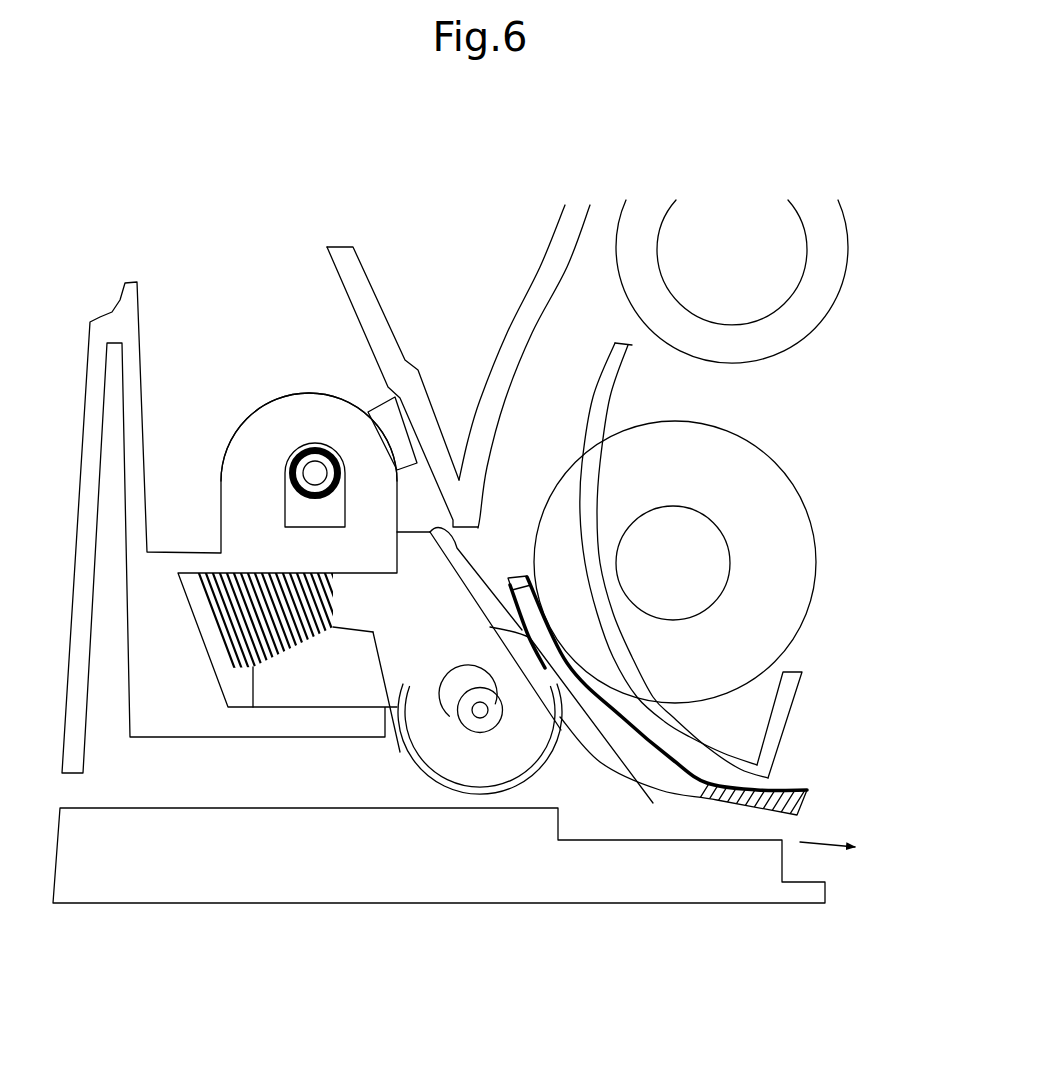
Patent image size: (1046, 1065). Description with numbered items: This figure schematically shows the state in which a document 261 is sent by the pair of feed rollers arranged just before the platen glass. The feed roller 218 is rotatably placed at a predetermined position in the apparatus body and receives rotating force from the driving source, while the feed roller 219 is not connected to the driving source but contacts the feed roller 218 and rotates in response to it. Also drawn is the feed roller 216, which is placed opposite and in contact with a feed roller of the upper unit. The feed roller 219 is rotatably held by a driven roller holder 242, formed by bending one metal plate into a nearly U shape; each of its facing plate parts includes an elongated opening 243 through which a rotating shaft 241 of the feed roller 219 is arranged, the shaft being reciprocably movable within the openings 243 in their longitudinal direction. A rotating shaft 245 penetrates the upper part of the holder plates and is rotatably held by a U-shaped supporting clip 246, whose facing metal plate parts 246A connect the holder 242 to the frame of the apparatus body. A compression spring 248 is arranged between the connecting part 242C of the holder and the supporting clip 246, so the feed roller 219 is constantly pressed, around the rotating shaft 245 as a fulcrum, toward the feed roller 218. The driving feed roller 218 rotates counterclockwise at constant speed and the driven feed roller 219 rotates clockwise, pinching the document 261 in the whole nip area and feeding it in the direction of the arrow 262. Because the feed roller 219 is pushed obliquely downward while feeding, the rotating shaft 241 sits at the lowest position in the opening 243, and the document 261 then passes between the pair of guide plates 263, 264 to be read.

The feed roller 216 is at (848, 265).
The feed roller 218 is at (793, 486).
The feed roller 219 is at (405, 758).
The rotating shaft 241 is at (482, 713).
The driven roller holder 242 is at (458, 757).
The connecting part 242C is at (342, 604).
The opening 243 is at (440, 683).
The rotating shaft 245 is at (318, 470).
The supporting clip 246 is at (170, 713).
The metal plate part 246A is at (260, 422).
The compression spring 248 is at (252, 708).
The document 261 is at (797, 785).
The arrow 262 is at (835, 837).
The guide plate 263 is at (718, 762).
The guide plate 264 is at (656, 803).